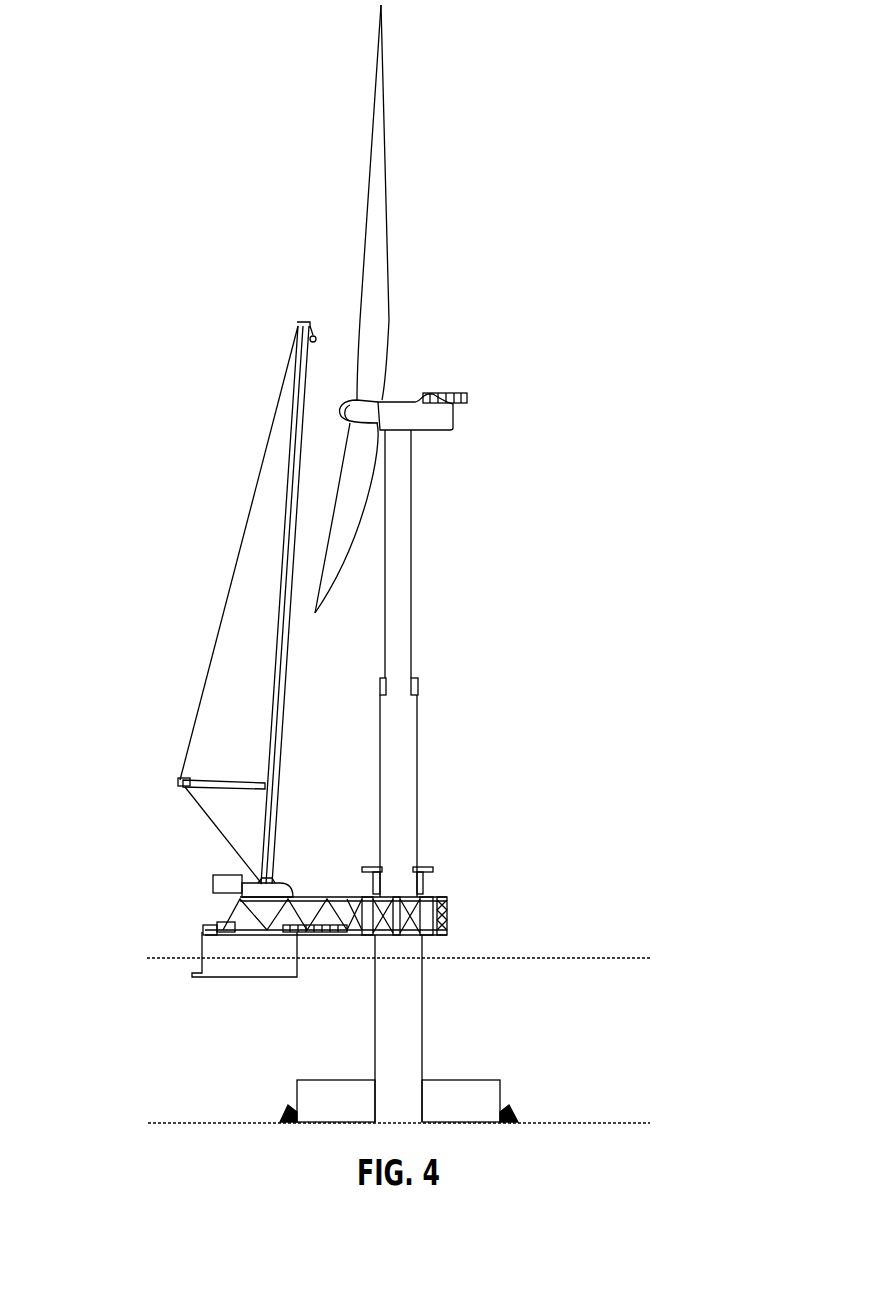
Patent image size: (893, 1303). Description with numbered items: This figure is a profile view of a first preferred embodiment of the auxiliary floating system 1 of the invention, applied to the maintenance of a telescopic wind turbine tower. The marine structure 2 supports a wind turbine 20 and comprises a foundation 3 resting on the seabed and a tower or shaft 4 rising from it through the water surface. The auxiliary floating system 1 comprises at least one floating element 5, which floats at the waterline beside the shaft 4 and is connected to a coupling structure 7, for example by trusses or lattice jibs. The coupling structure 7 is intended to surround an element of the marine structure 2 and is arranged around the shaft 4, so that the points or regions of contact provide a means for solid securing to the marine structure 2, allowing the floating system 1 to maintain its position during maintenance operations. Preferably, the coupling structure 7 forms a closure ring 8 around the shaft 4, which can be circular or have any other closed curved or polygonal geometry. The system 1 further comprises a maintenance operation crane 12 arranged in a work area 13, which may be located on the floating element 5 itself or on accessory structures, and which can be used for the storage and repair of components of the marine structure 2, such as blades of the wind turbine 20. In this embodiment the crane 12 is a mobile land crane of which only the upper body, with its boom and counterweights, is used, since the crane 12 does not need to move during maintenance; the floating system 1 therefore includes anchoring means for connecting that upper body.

The auxiliary floating system 1 is at (291, 671).
The marine structure 2 is at (486, 309).
The foundation 3 is at (487, 1092).
The tower or shaft 4 is at (413, 592).
The floating element 5 is at (222, 964).
The coupling structure 7 is at (303, 897).
The closure ring 8 is at (448, 895).
The maintenance operation crane 12 is at (278, 606).
The work area 13 is at (220, 613).
The wind turbine 20 is at (400, 402).